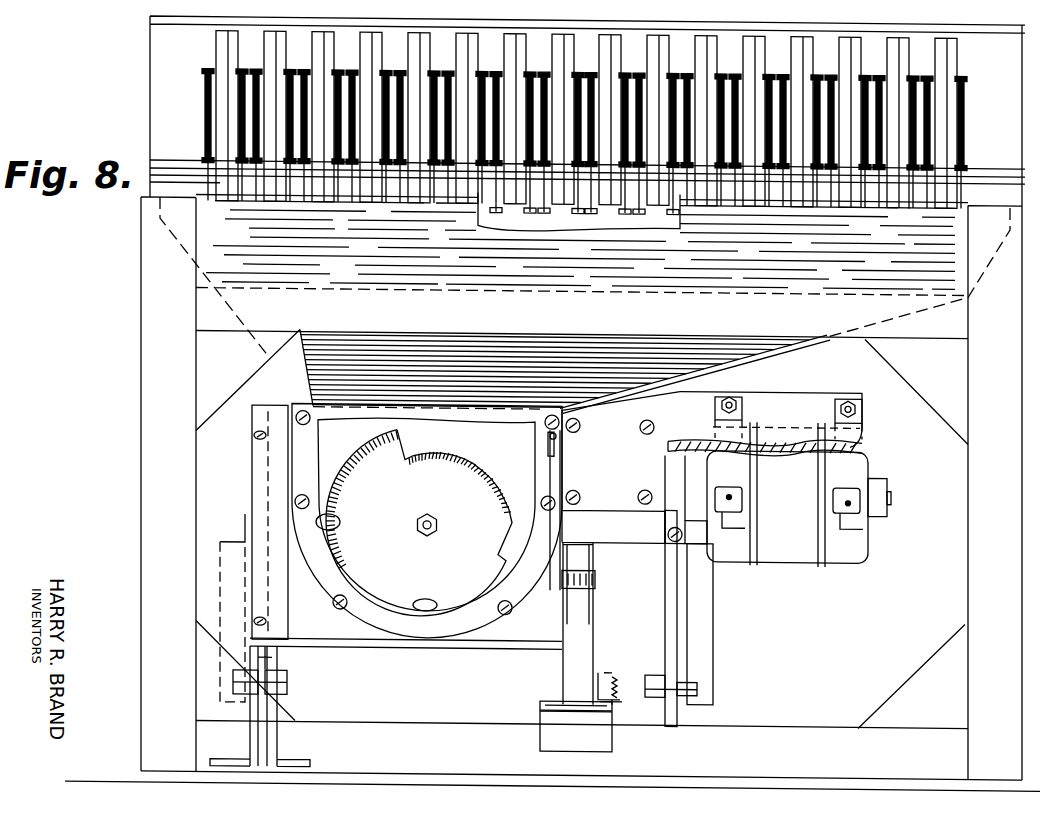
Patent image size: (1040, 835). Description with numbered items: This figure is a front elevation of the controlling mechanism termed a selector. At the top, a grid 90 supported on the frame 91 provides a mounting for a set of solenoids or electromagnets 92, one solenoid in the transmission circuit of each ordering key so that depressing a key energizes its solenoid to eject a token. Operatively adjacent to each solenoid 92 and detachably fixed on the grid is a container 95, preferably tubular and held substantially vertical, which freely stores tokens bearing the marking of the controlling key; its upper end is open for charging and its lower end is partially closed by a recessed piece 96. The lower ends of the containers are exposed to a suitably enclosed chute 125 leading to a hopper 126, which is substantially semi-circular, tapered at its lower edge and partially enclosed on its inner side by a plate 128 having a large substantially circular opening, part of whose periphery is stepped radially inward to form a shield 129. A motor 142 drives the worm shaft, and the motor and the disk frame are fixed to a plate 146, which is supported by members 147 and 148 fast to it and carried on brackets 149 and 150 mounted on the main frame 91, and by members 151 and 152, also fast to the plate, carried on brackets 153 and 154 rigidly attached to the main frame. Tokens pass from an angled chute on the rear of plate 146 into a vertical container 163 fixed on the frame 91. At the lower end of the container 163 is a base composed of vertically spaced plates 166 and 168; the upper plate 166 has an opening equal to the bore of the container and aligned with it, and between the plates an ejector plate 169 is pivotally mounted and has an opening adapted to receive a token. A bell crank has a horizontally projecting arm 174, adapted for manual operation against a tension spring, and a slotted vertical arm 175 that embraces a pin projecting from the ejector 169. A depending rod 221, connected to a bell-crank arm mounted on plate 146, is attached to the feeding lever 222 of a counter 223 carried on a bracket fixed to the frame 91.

The grid 90 is at (975, 169).
The frame 91 is at (147, 310).
The solenoids or electromagnets 92 is at (212, 96).
The container 95 is at (220, 47).
The recessed piece 96 is at (650, 210).
The chute 125 is at (305, 375).
The hopper 126 is at (535, 468).
The plate 128 is at (343, 438).
The shield 129 is at (513, 481).
The motor 142 is at (790, 548).
The plate 146 is at (272, 472).
The member 147 is at (222, 551).
The member 148 is at (705, 622).
The bracket 149 is at (240, 761).
The bracket 150 is at (682, 716).
The member 151 is at (262, 654).
The member 152 is at (672, 631).
The bracket 153 is at (275, 691).
The bracket 154 is at (660, 711).
The vertical container 163 is at (585, 630).
The upper plate 166 is at (563, 708).
The plate 168 is at (560, 714).
The ejector plate 169 is at (565, 711).
The horizontally projecting arm 174 is at (598, 680).
The slotted vertical arm 175 is at (615, 700).
The depending rod 221 is at (578, 496).
The feeding lever 222 is at (550, 586).
The counter 223 is at (600, 575).